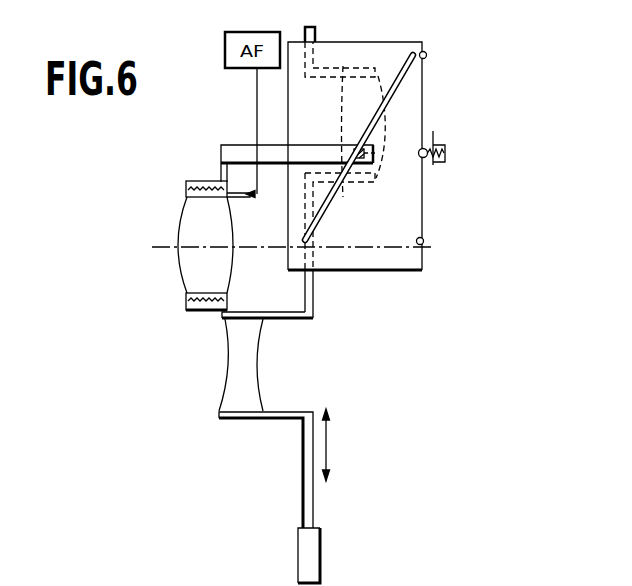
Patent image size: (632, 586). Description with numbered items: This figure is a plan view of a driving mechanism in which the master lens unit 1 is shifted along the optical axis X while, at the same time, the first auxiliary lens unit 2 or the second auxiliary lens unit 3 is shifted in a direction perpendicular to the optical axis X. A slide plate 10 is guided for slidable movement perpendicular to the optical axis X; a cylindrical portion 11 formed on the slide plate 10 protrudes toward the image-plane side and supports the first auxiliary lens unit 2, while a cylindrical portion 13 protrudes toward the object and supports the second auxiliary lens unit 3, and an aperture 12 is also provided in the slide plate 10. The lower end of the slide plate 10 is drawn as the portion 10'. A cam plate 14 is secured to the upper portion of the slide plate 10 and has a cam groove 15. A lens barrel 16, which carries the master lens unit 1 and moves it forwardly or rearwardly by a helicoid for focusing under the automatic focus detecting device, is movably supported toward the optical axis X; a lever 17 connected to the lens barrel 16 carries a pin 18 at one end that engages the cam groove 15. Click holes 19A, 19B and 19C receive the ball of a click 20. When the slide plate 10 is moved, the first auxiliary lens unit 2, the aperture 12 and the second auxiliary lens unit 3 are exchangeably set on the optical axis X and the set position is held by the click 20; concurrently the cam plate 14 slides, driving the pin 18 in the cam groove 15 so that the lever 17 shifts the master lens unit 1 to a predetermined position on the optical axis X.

The master lens unit 1 is at (186, 218).
The first auxiliary lens unit 2 is at (343, 108).
The second auxiliary lens unit 3 is at (228, 385).
The slide plate 10 is at (287, 325).
The weight / slider 10' is at (333, 555).
The cylindrical portion 11 is at (342, 68).
The aperture 12 is at (313, 280).
The cylindrical portion 13 is at (278, 415).
The cam plate 14 is at (408, 265).
The cam groove 15 is at (335, 203).
The lens barrel 16 is at (203, 183).
The lever 17 is at (237, 146).
The pin 18 is at (374, 157).
The click hole 19A is at (428, 56).
The click hole 19B is at (420, 148).
The click hole 19C is at (424, 241).
The click 20 is at (444, 163).
The optical axis X is at (167, 250).